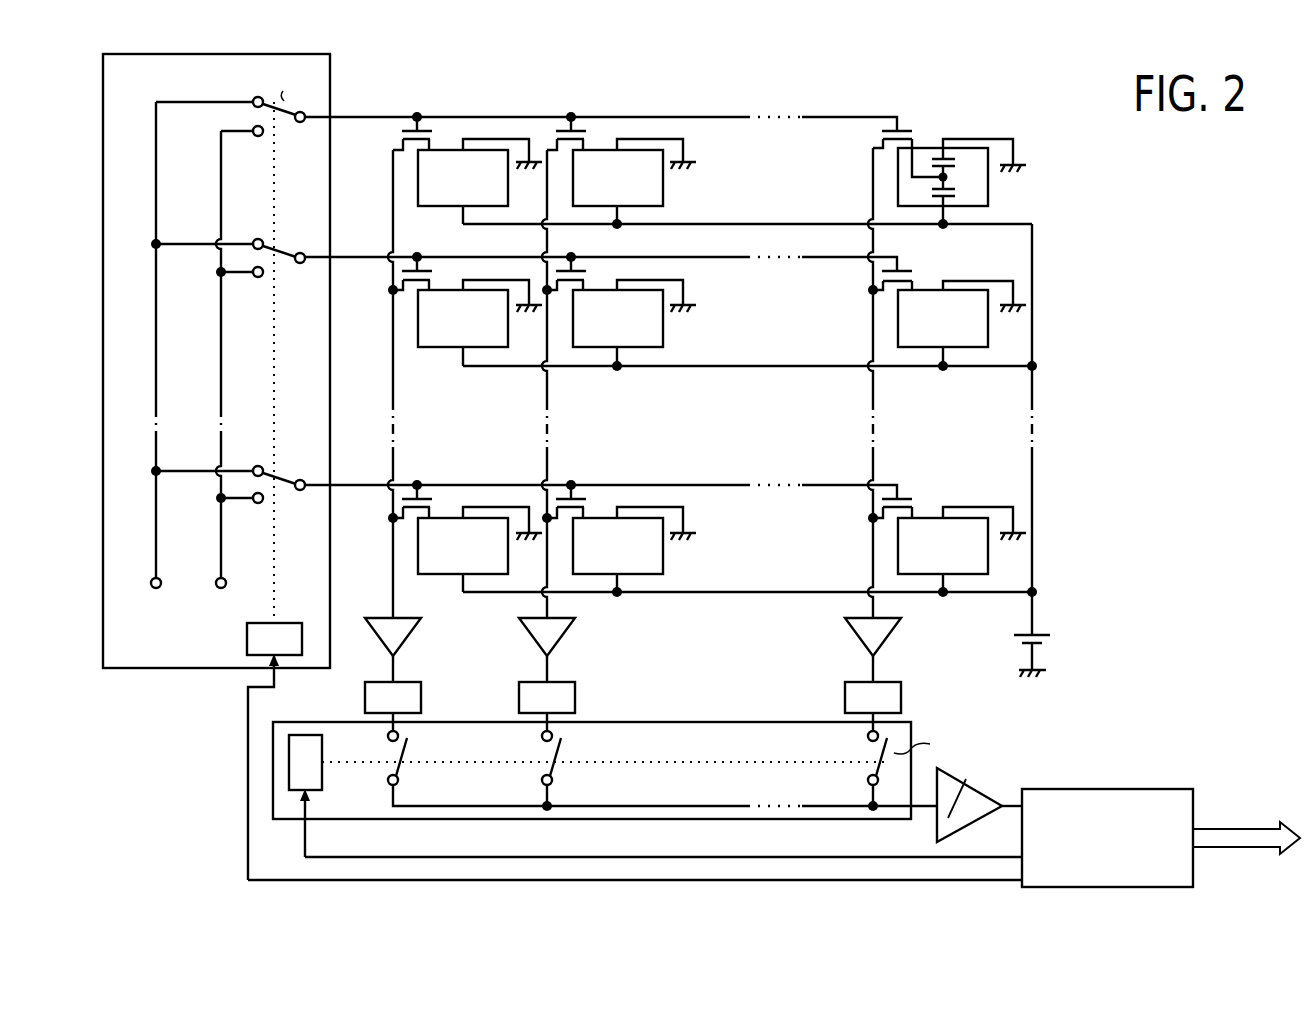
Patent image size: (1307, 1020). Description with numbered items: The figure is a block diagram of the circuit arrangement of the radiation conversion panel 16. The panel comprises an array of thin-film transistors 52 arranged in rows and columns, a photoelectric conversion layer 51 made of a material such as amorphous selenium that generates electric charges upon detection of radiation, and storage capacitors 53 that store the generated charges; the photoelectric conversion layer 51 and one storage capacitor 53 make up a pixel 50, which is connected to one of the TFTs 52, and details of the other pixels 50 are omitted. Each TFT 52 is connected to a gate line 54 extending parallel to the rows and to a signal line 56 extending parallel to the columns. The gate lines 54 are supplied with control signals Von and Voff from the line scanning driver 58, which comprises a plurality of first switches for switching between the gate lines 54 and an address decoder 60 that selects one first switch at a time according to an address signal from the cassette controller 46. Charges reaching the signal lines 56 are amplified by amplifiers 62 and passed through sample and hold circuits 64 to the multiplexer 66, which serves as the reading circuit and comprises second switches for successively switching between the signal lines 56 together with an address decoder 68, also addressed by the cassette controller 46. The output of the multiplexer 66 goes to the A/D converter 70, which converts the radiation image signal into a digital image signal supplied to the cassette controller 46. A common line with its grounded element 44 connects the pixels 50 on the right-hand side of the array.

The radiation conversion panel 16 is at (894, 80).
The bias voltage supply line 44 is at (1045, 627).
The cassette controller 46 is at (1170, 789).
The pixel 50 is at (663, 200).
The photoelectric conversion layer 51 is at (958, 192).
The thin-film transistor 52 is at (881, 133).
The storage capacitor 53 is at (956, 162).
The gate line 54 is at (837, 116).
The signal line 56 is at (873, 179).
The line scanning driver 58 is at (103, 96).
The address decoder 60 is at (247, 640).
The amplifier 62 is at (566, 633).
The sample and hold circuit 64 is at (577, 698).
The multiplexer 66 is at (745, 721).
The address decoder 68 is at (322, 774).
The A/D converter 70 is at (988, 791).